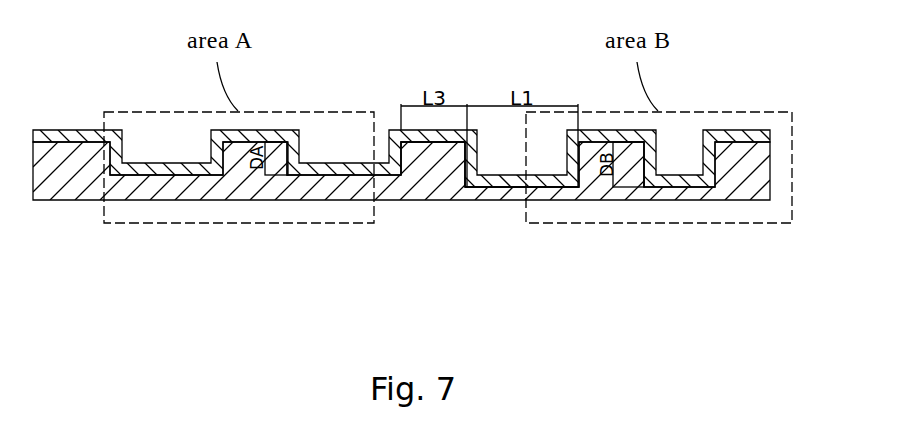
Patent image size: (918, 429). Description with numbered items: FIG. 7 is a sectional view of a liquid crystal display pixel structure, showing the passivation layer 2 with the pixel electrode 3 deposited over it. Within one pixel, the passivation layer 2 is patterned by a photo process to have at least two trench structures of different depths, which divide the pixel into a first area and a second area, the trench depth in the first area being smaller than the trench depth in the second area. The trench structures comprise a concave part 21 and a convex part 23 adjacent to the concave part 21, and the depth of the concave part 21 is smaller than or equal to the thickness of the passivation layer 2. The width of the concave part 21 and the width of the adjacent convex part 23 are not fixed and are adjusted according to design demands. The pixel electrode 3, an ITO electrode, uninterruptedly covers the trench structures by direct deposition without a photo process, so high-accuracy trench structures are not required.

The passivation layer 2 is at (158, 200).
The pixel electrode 3 is at (80, 135).
The convex part 23 is at (433, 143).
The concave part 21 is at (493, 187).